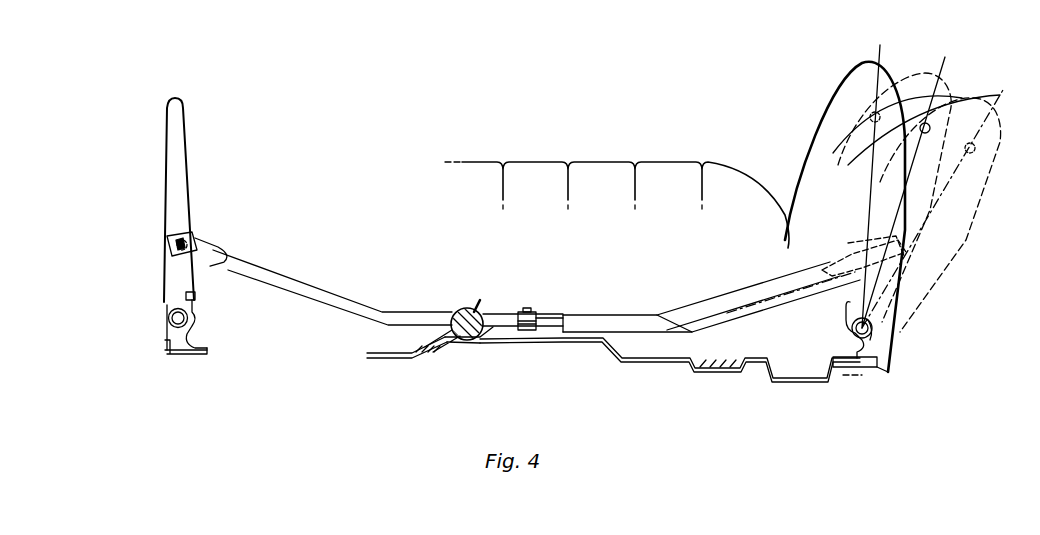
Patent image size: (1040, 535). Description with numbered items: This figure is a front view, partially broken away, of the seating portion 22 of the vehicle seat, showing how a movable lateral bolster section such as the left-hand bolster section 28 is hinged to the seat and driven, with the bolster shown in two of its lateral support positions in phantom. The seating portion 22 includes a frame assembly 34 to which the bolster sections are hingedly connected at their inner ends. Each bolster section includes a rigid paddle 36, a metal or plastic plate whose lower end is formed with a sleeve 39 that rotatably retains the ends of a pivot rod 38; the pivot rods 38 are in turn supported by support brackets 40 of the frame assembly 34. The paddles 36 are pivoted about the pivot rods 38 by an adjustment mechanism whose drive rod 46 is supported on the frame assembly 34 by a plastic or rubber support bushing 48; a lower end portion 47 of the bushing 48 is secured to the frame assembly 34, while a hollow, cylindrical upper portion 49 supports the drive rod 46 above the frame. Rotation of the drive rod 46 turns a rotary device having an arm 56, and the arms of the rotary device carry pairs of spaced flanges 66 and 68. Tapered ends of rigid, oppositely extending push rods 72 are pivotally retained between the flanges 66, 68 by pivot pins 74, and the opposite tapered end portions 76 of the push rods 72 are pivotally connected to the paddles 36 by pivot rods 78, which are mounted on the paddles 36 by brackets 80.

The seating portion 22 is at (590, 172).
The left-hand bolster section 28 is at (812, 125).
The frame assembly 34 is at (668, 372).
The rigid paddles 36 is at (166, 172).
The pivot rods 38 is at (172, 303).
The sleeves 39 is at (170, 318).
The support brackets 40 is at (163, 350).
The drive rod 46 is at (482, 296).
The lower end portion 47 is at (458, 342).
The support bushing 48 is at (422, 350).
The upper portion 49 is at (462, 306).
The arm 56 is at (503, 316).
The flange 66 is at (542, 318).
The flange 68 is at (551, 330).
The push rods 72 is at (318, 286).
The pivot pins 74 is at (529, 310).
The tapered end portions 76 is at (216, 248).
The pivot rods 78 is at (198, 238).
The brackets 80 is at (165, 243).